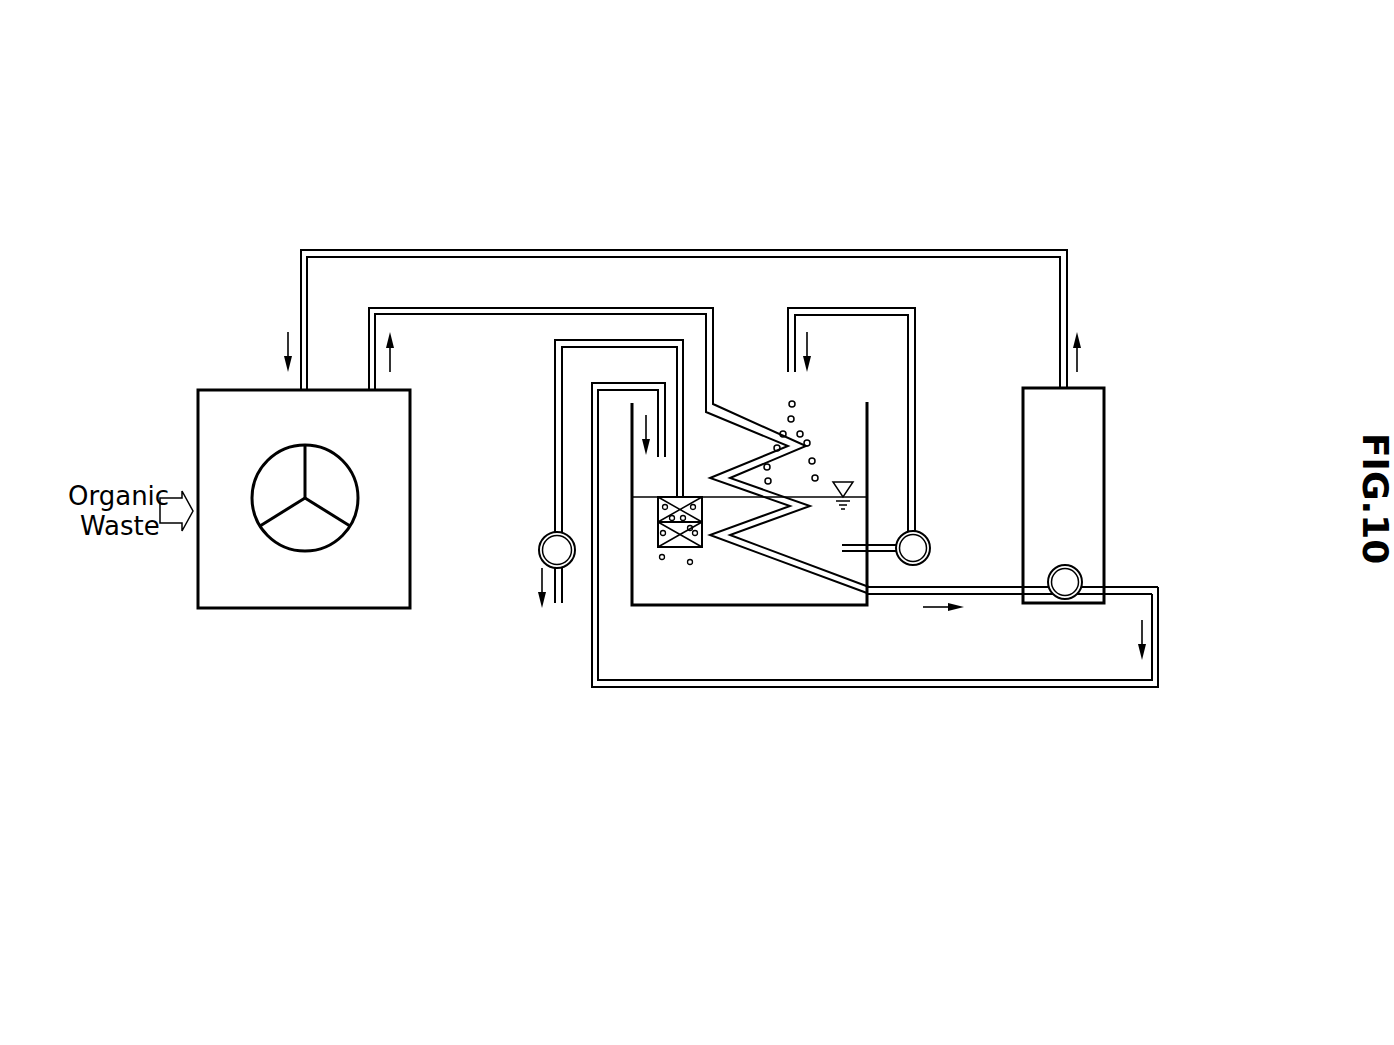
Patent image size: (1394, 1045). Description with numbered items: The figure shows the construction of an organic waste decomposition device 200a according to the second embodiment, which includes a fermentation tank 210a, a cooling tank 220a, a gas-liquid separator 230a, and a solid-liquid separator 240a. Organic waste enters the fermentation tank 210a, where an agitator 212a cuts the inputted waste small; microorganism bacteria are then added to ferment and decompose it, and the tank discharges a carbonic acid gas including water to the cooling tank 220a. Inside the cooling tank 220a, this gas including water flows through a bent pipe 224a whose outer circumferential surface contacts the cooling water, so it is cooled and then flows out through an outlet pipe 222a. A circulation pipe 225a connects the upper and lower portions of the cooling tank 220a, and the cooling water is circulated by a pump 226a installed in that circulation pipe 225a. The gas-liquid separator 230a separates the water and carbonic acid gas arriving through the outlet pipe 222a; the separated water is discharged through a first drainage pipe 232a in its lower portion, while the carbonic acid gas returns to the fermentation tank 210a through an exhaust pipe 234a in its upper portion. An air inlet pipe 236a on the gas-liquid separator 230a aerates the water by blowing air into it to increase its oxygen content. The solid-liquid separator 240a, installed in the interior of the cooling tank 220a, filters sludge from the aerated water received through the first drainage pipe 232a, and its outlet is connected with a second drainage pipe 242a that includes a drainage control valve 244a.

The organic waste decomposition device 200a is at (700, 198).
The fermentation tank 210a is at (362, 600).
The agitator 212a is at (278, 537).
The cooling tank 220a is at (753, 597).
The outlet pipe 222a is at (990, 572).
The bent pipe 224a is at (716, 414).
The circulation pipe 225a is at (962, 338).
The pump 226a is at (925, 533).
The gas-liquid separator 230a is at (1100, 468).
The first drainage pipe 232a is at (1060, 688).
The exhaust pipe 234a is at (928, 250).
The air inlet pipe 236a is at (1082, 572).
The solid-liquid separator 240a is at (678, 548).
The second drainage pipe 242a is at (555, 397).
The drainage control valve 244a is at (540, 541).